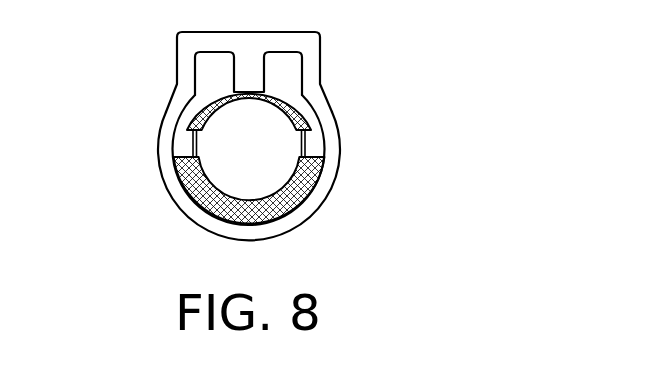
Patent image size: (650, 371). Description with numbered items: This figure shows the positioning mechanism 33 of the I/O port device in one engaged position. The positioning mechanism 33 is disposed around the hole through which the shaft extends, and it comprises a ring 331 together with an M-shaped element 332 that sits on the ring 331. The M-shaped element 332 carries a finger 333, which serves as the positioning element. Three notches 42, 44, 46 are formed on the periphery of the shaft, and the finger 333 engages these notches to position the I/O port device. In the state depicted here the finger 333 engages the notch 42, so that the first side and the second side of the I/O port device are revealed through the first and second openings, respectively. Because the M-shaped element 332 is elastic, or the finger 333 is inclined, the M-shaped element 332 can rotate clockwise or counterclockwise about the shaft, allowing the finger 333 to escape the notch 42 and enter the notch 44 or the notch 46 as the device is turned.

The positioning mechanism 33 is at (341, 130).
The ring 331 is at (317, 167).
The M-shaped element 332 is at (336, 34).
The finger 333 is at (250, 73).
The notch 42 is at (240, 92).
The notch 44 is at (193, 148).
The notch 46 is at (304, 148).